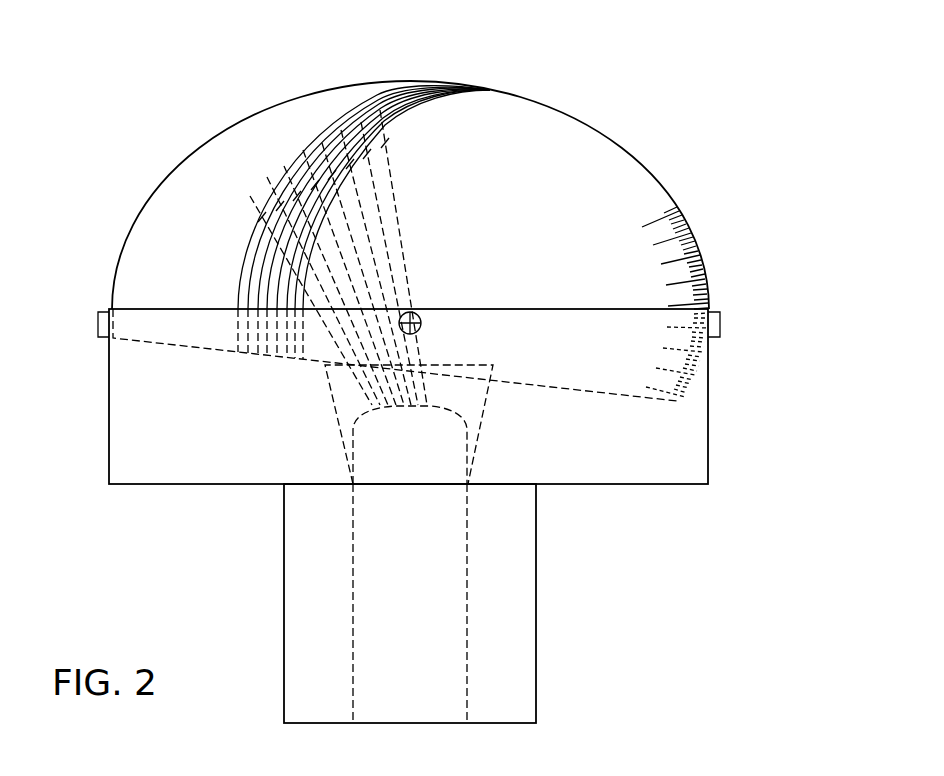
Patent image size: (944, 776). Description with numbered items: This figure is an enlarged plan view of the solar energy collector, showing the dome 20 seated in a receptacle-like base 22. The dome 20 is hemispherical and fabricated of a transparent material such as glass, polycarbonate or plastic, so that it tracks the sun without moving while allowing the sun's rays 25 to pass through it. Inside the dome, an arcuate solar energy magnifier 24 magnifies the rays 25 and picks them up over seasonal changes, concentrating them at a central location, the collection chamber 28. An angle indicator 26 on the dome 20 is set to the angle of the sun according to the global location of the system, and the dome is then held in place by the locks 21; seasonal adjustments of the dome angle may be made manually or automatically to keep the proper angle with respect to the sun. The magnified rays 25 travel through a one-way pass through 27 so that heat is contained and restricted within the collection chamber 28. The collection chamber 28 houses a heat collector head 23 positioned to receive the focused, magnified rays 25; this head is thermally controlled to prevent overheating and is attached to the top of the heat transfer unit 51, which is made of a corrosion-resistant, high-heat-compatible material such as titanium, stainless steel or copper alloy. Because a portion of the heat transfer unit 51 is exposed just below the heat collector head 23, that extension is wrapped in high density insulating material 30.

The dome 20 is at (158, 181).
The locks 21 is at (98, 325).
The receptacle-like base 22 is at (109, 398).
The heat collector head 23 is at (366, 462).
The solar energy magnifier 24 is at (386, 112).
The sun's rays 25 is at (388, 205).
The angle indicator 26 is at (702, 255).
The one-way pass through 27 is at (462, 363).
The collection chamber 28 is at (477, 435).
The high density insulating material 30 is at (536, 580).
The heat transfer unit 51 is at (467, 655).